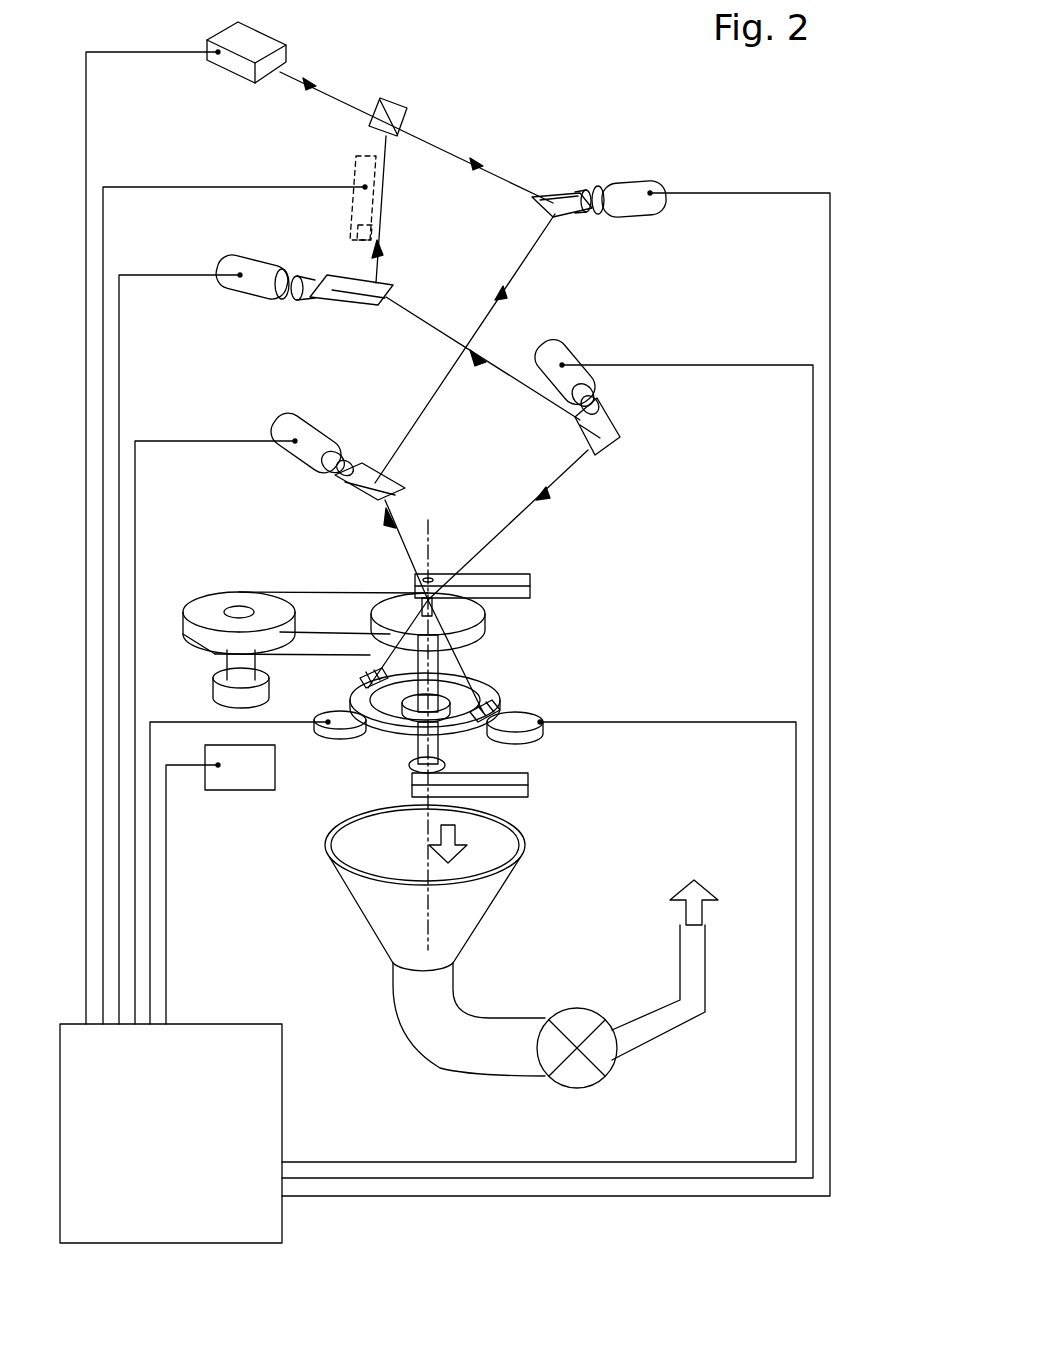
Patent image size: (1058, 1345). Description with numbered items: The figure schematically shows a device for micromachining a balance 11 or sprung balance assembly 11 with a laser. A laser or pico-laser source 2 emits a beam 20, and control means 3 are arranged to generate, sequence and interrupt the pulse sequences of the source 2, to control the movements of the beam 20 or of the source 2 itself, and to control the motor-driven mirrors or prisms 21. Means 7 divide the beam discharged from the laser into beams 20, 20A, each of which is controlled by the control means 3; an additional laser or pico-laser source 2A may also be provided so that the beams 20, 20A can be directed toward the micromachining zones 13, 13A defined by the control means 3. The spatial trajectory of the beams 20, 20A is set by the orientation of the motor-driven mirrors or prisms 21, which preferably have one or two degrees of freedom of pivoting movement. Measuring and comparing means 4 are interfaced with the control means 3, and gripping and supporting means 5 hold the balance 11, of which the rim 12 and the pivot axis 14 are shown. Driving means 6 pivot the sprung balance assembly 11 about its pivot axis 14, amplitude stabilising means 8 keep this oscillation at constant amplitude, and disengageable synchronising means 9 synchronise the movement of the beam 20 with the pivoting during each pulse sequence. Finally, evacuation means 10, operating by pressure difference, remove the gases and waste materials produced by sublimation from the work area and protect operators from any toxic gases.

The laser or pico-laser source 2 is at (253, 42).
The laser or pico-laser source 2A is at (355, 172).
The control means 3 is at (178, 1240).
The measuring and comparing means 4 is at (338, 735).
The gripping and supporting means 5 is at (555, 583).
The driving means 6 is at (212, 690).
The means for dividing the beam 7 is at (402, 103).
The amplitude stabilising means 8 is at (552, 742).
The synchronising means 9 is at (262, 790).
The evacuation means 10 is at (520, 846).
The balance or sprung balance assembly 11 is at (518, 708).
The rim 12 is at (488, 675).
The micromachining zone 13 is at (478, 725).
The micromachining zone 13A is at (358, 690).
The pivot axis 14 is at (440, 538).
The beam 20 is at (343, 97).
The beam 20A is at (385, 152).
The motor-driven mirrors or prisms 21 is at (635, 180).